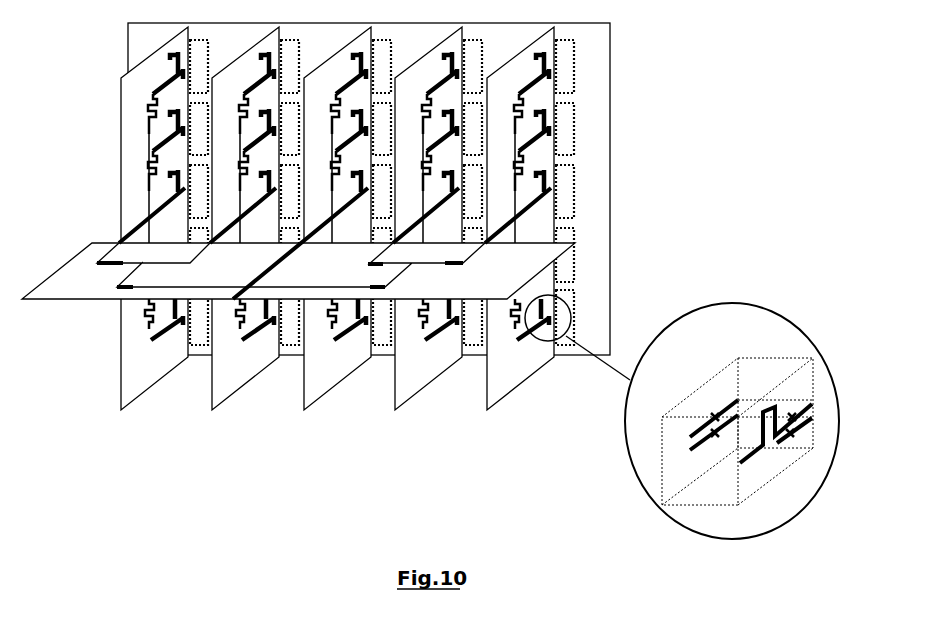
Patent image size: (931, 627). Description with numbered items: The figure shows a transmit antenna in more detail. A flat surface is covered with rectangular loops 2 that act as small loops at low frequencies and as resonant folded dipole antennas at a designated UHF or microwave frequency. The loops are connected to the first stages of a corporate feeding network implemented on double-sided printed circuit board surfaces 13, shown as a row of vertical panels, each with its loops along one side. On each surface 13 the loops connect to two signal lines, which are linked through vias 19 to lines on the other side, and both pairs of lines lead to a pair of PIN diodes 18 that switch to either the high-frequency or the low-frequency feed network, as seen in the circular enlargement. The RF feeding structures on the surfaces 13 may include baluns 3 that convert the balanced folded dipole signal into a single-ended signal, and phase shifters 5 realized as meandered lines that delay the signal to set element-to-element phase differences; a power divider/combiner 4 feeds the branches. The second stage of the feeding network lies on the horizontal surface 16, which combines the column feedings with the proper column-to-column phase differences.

The printed circuit board surface 13 is at (467, 266).
The rectangular loop antenna 2 is at (390, 192).
The power divider/combiner 4 is at (350, 196).
The phase shifter 5 is at (334, 211).
The balanced-unbalanced transformer 3 is at (454, 334).
The surface 16 is at (531, 311).
The PIN diode 18 is at (761, 434).
The via 19 is at (775, 400).